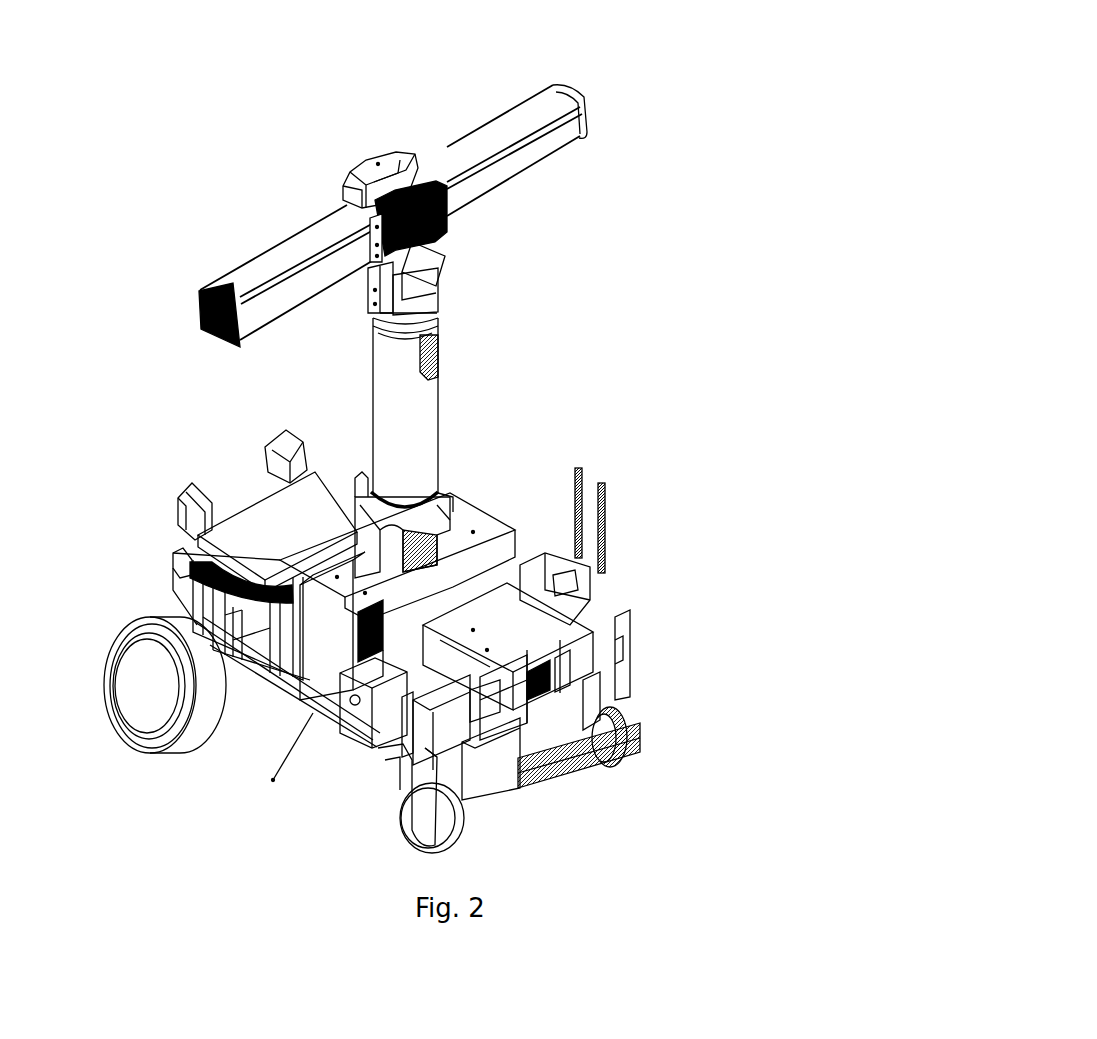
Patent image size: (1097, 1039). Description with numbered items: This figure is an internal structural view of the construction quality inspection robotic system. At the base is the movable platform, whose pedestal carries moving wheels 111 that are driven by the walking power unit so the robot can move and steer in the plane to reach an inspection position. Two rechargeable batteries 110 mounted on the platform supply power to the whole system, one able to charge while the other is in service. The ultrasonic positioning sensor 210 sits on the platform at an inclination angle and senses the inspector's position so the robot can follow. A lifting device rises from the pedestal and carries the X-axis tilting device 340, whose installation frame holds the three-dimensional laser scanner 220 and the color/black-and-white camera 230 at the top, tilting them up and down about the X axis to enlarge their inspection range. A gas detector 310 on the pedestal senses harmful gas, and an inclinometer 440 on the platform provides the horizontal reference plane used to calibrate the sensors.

The rechargeable battery 110 is at (582, 665).
The moving wheels 111 is at (157, 710).
The ultrasonic positioning sensor 210 is at (182, 487).
The 3D laser scanner 220 is at (578, 100).
The color/black-and-white camera 230 is at (378, 170).
The gas detector 310 is at (630, 752).
The X-axis tilting device 340 is at (447, 290).
The inclinometer 440 is at (598, 572).